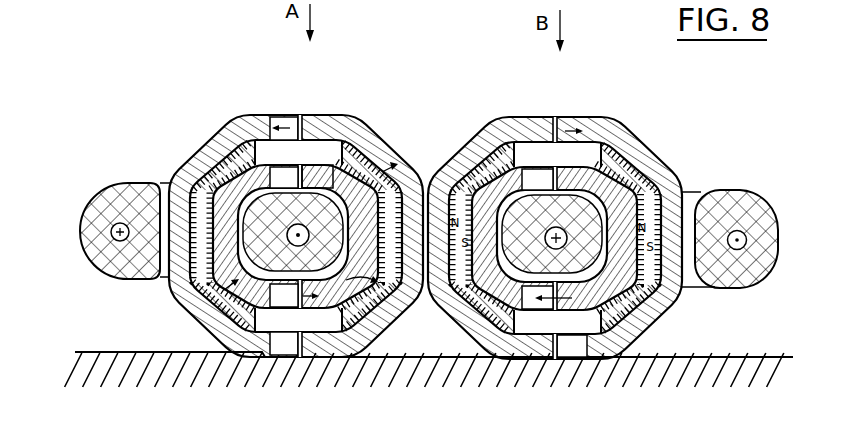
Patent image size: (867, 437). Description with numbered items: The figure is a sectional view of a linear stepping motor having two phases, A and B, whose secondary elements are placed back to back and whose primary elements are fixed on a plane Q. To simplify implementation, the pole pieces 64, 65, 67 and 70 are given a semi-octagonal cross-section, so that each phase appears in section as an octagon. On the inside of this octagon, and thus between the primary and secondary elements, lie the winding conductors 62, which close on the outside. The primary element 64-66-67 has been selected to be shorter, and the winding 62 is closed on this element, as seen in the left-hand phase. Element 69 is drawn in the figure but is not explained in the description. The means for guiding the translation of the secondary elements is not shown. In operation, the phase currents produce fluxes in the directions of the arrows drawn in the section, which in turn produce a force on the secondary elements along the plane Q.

The winding conductors 62 is at (268, 204).
The pole piece 64 is at (272, 165).
The pole piece 65 is at (325, 170).
The primary element part 66 is at (212, 183).
The pole piece 67 is at (257, 176).
The permanent magnet 69 is at (386, 163).
The pole piece 70 is at (400, 156).
The plane Q is at (758, 357).